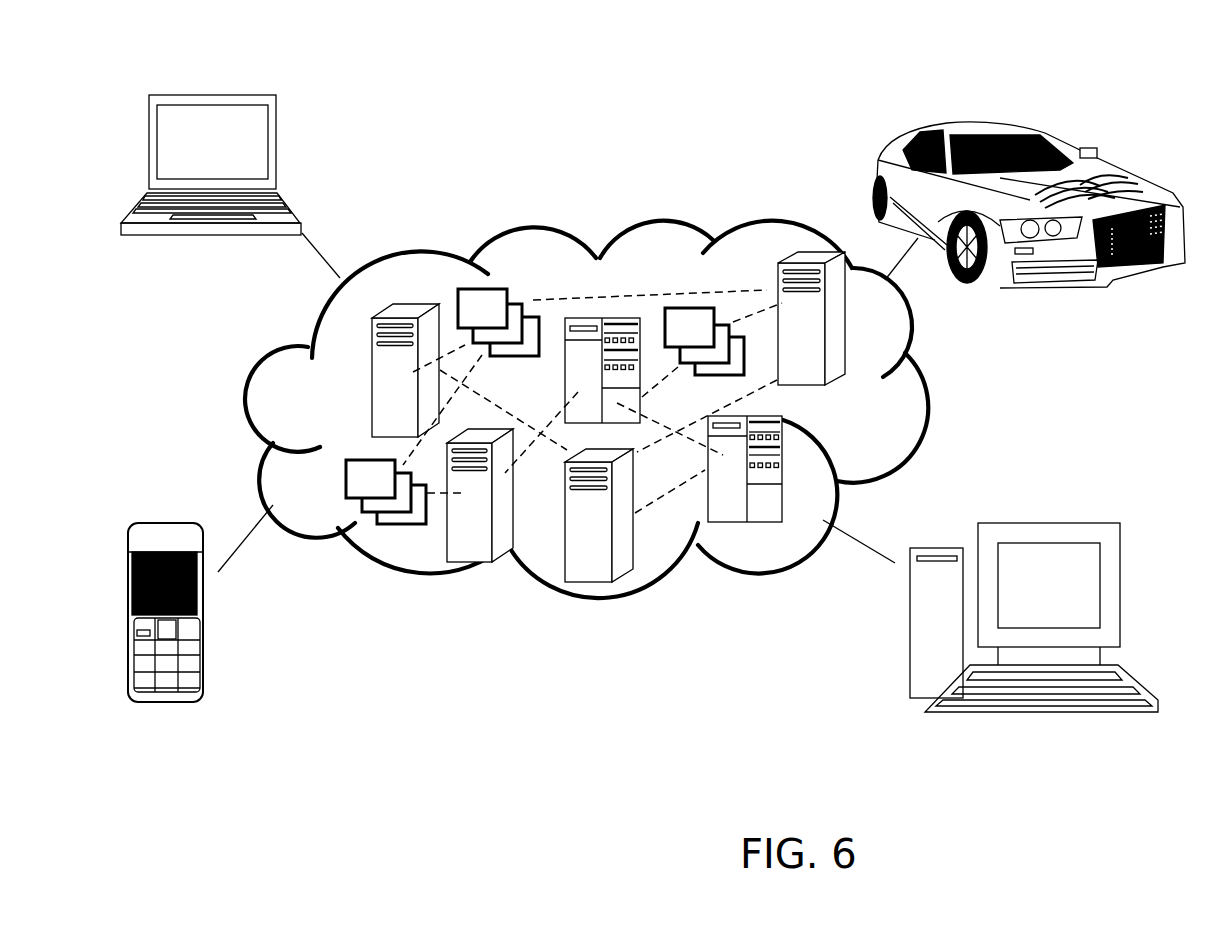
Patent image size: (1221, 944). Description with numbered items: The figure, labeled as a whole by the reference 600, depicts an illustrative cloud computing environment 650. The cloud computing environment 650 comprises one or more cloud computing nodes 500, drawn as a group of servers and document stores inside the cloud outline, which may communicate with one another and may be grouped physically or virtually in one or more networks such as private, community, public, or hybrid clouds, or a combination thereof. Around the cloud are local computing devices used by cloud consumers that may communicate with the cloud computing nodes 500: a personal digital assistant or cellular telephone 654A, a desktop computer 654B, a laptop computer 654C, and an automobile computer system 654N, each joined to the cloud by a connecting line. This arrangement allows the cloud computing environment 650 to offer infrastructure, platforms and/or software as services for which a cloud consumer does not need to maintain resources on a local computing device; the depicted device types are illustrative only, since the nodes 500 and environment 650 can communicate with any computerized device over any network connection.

The networked environment 600 is at (1053, 59).
The cloud computing environment 650 is at (933, 392).
The cloud computing nodes 500 is at (853, 406).
The cellular telephone 654A is at (218, 640).
The desktop computer 654B is at (933, 620).
The laptop computer 654C is at (290, 173).
The automobile computer system 654N is at (865, 158).